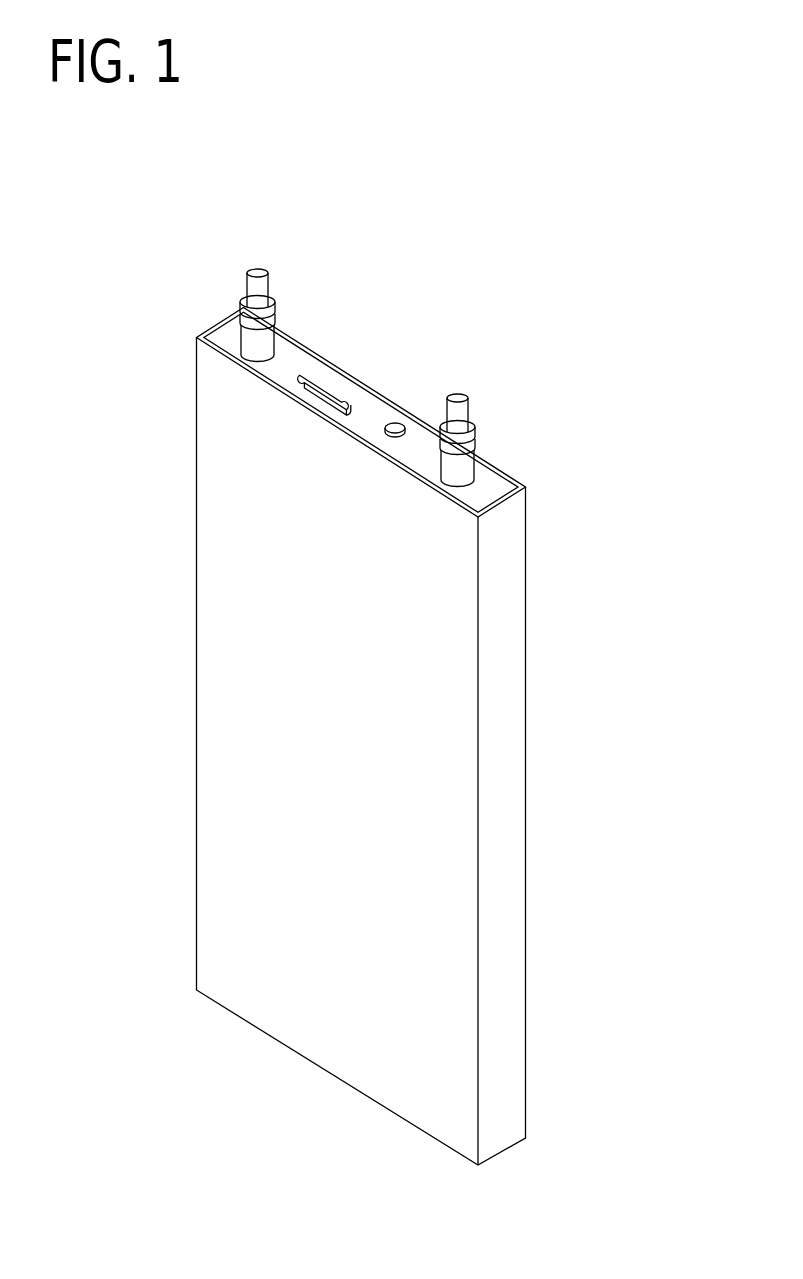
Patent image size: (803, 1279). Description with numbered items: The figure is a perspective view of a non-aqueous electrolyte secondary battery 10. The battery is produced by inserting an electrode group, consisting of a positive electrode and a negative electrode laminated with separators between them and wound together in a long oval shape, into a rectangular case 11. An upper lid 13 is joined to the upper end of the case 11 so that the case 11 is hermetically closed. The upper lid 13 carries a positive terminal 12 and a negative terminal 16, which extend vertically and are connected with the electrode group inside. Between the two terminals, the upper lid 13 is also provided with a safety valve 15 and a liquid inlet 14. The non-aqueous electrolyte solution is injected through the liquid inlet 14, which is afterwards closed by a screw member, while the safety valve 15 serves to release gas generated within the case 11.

The non-aqueous electrolyte secondary battery 10 is at (560, 468).
The case 11 is at (218, 607).
The positive terminal 12 is at (466, 396).
The upper lid 13 is at (416, 443).
The liquid inlet 14 is at (399, 421).
The safety valve 15 is at (319, 377).
The negative terminal 16 is at (259, 268).